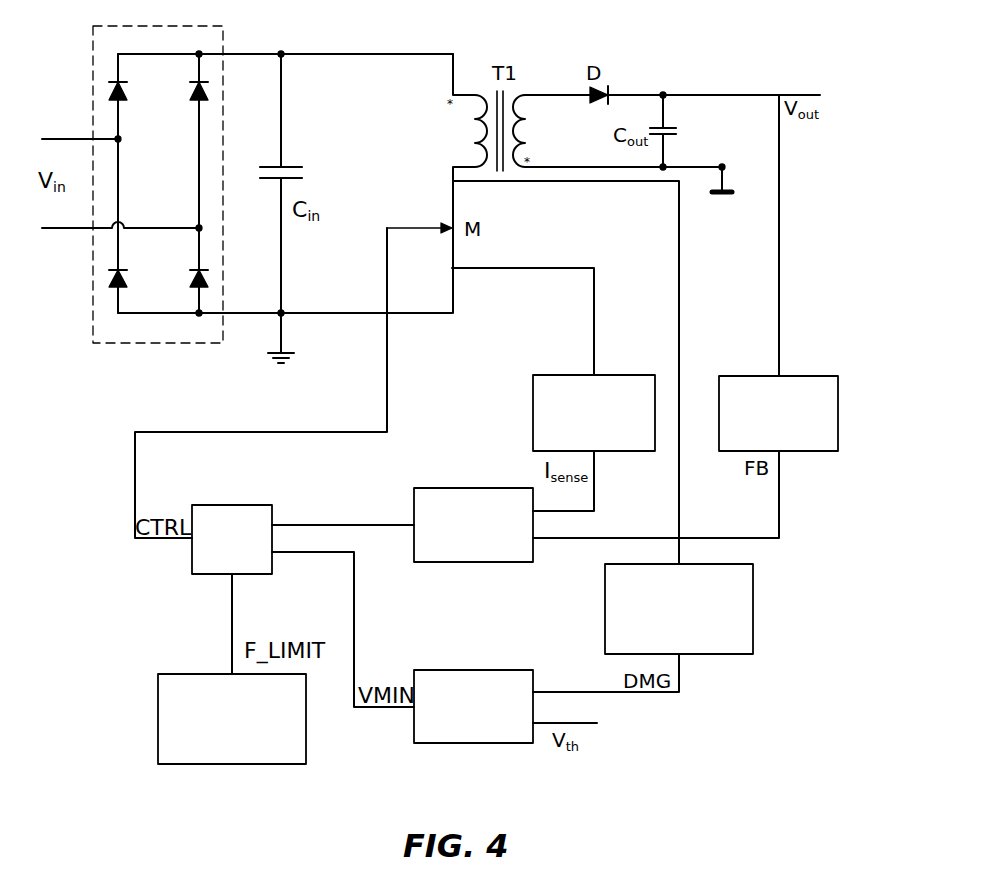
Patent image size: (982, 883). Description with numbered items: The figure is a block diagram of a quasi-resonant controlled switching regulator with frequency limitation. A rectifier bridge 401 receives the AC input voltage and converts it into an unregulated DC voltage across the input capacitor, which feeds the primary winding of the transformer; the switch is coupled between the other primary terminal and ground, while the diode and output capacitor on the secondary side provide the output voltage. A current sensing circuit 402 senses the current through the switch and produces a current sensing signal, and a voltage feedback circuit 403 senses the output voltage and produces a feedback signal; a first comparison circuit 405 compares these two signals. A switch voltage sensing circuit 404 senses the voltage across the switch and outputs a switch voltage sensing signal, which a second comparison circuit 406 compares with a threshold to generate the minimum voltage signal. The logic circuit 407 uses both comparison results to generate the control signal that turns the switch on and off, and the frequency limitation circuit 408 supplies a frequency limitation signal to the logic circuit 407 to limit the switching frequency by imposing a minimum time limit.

The rectifier bridge 401 is at (92, 287).
The current sensing circuit 402 is at (615, 452).
The voltage feedback circuit 403 is at (805, 453).
The switch voltage sensing circuit 404 is at (722, 656).
The first comparison circuit 405 is at (430, 563).
The second comparison circuit 406 is at (430, 744).
The logic circuit 407 is at (215, 575).
The frequency limitation circuit 408 is at (195, 766).